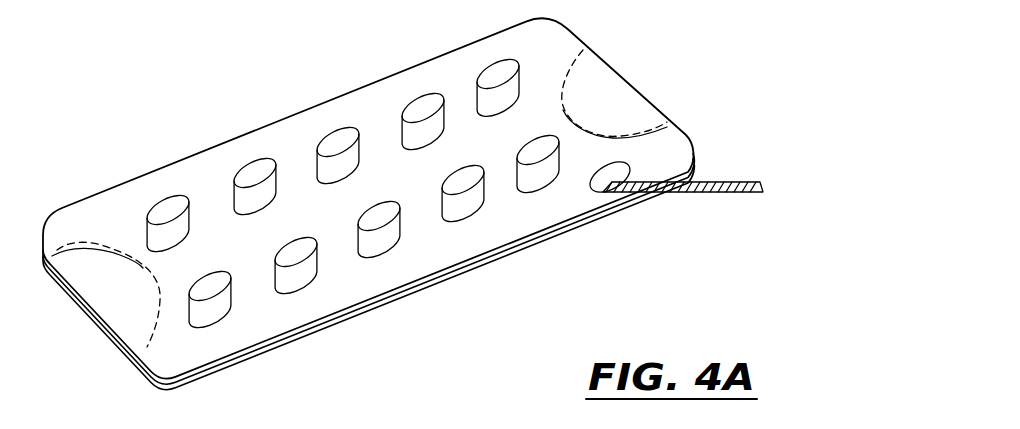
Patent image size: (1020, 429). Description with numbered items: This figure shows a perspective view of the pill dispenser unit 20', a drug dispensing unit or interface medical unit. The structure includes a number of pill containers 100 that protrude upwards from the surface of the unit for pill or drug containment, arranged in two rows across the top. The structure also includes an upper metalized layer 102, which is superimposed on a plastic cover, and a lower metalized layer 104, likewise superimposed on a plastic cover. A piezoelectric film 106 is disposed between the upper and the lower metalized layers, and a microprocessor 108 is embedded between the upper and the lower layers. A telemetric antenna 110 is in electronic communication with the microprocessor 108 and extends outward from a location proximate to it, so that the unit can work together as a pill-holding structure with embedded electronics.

The pill dispenser unit 20' is at (447, 197).
The pill containers 100 is at (316, 266).
The upper metalized layer 102 is at (97, 295).
The lower metalized layer 104 is at (615, 100).
The piezoelectric film 106 is at (477, 266).
The microprocessor 108 is at (630, 173).
The telemetric antenna 110 is at (763, 185).